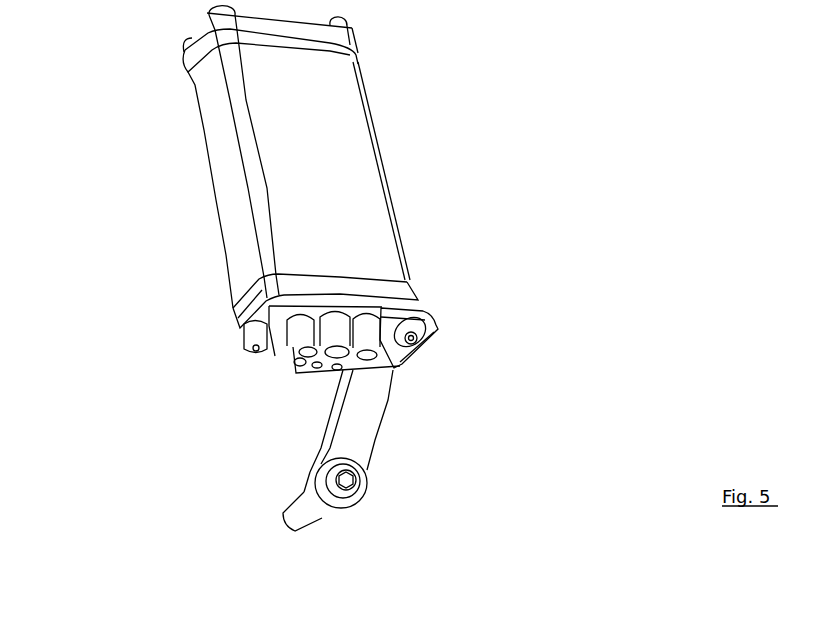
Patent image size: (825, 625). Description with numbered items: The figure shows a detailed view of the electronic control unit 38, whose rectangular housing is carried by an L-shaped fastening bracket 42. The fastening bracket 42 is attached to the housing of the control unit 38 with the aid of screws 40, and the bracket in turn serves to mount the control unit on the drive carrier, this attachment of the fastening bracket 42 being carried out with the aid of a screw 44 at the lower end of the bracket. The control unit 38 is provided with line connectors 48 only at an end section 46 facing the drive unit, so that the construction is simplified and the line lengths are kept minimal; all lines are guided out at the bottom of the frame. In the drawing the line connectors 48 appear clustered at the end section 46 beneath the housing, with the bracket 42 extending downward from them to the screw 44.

The electronic control unit 38 is at (367, 190).
The screws 40 is at (435, 324).
The L-shaped fastening bracket 42 is at (373, 431).
The screw 44 is at (313, 510).
The end section 46 is at (176, 324).
The line connectors 48 is at (290, 376).